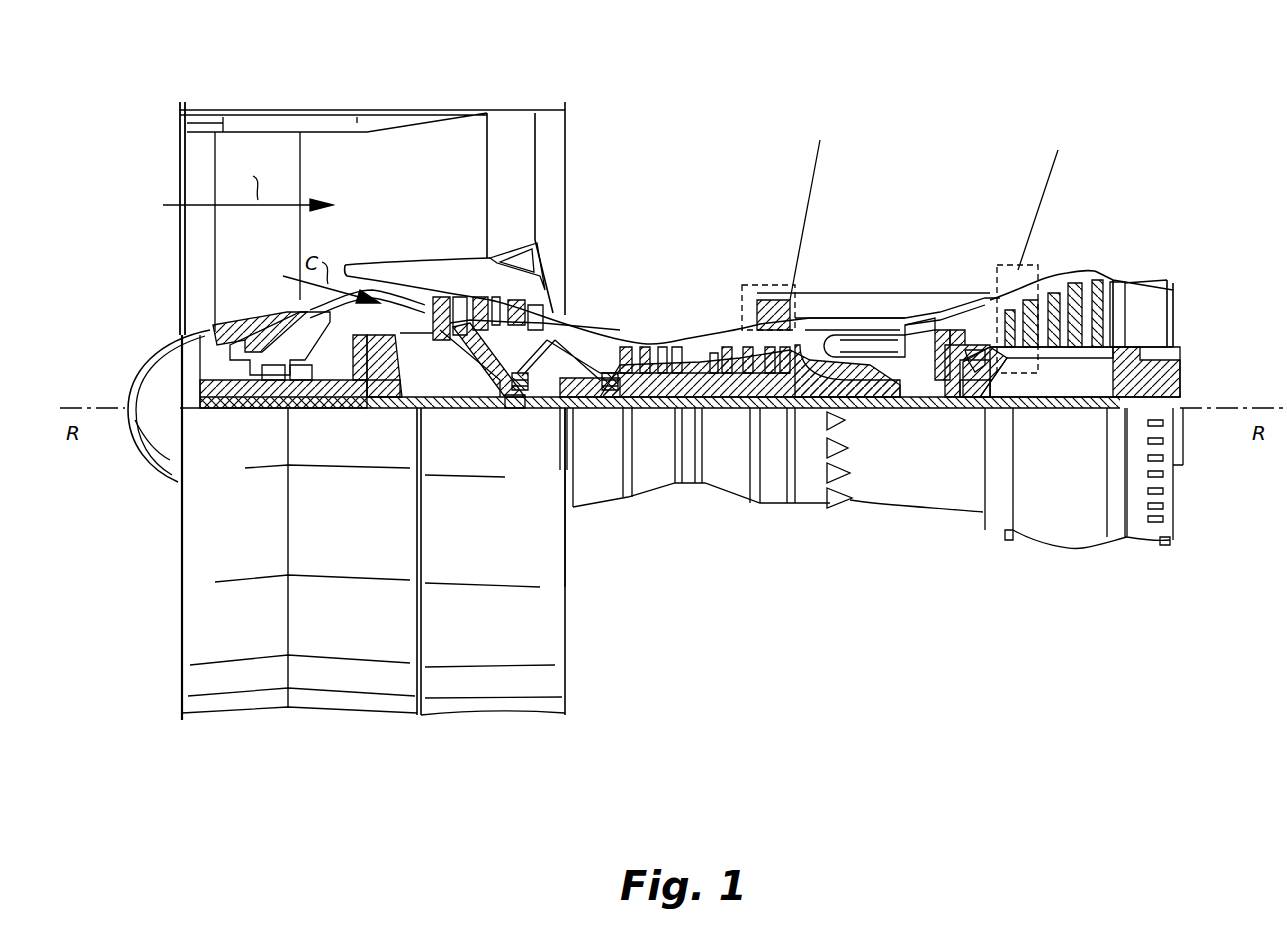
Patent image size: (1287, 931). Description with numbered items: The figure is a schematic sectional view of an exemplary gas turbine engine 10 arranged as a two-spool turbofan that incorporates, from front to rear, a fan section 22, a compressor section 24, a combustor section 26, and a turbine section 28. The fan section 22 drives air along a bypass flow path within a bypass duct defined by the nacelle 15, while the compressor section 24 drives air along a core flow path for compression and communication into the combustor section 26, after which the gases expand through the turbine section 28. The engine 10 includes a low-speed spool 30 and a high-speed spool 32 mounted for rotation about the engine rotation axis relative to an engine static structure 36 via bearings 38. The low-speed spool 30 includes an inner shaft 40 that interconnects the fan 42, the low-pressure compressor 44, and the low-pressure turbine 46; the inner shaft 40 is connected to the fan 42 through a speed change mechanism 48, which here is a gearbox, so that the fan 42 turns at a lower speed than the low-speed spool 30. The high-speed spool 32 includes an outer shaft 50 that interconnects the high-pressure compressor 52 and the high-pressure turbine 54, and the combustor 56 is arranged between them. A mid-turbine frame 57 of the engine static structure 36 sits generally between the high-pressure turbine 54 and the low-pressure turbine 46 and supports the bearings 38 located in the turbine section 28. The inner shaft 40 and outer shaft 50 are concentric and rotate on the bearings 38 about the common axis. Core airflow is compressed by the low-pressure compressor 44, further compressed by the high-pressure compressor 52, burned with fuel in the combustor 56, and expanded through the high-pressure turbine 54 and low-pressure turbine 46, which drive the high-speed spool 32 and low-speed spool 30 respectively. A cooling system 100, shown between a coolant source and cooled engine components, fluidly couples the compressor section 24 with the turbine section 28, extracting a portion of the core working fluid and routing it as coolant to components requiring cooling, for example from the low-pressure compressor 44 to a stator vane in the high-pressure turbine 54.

The gas turbine engine 10 is at (655, 143).
The nacelle 15 is at (380, 110).
The fan section 22 is at (418, 752).
The compressor section 24 is at (828, 752).
The combustor section 26 is at (906, 752).
The turbine section 28 is at (1183, 752).
The low-speed spool 30 is at (712, 410).
The high-speed spool 32 is at (773, 320).
The engine static structure 36 is at (771, 503).
The bearings 38 is at (515, 410).
The inner shaft 40 is at (550, 410).
The fan 42 is at (252, 250).
The low-pressure compressor 44 is at (500, 293).
The low-pressure turbine 46 is at (1094, 254).
The speed change mechanism 48 is at (378, 410).
The outer shaft 50 is at (868, 410).
The high-pressure compressor 52 is at (653, 326).
The high-pressure turbine 54 is at (906, 297).
The combustor 56 is at (838, 320).
The mid-turbine frame 57 is at (968, 350).
The cooling system 100 is at (872, 293).